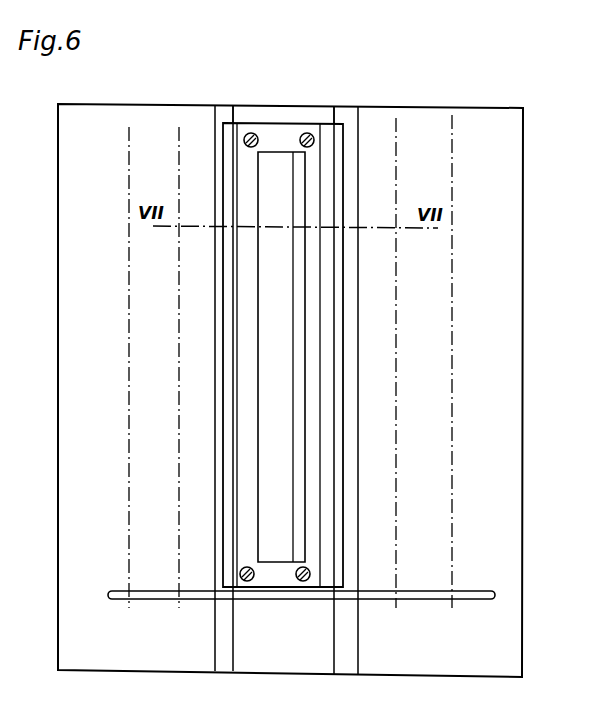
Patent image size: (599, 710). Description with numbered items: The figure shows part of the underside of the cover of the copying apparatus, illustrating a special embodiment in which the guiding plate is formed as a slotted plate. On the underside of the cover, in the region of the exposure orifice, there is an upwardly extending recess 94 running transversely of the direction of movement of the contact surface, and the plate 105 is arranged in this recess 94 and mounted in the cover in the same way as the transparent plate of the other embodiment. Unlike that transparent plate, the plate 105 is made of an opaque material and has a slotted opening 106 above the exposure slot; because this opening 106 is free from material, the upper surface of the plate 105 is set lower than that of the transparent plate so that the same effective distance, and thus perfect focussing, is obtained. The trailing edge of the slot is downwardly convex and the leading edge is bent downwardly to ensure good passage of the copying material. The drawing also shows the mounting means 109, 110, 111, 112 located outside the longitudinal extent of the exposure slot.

The recess 94 is at (290, 116).
The plate 105 is at (243, 353).
The slotted opening 106 is at (286, 383).
The mounting means 109 is at (248, 133).
The mounting means 110 is at (310, 134).
The mounting means 111 is at (247, 582).
The mounting means 112 is at (303, 582).